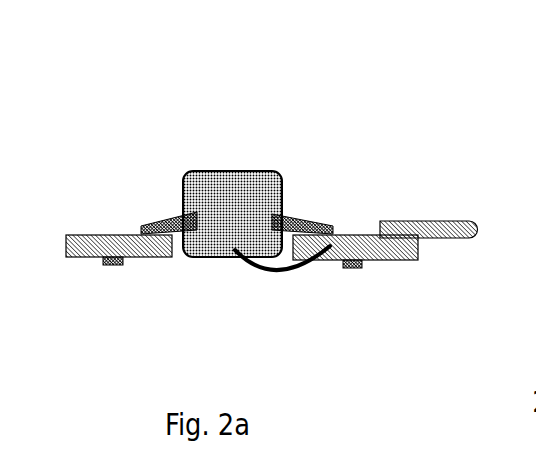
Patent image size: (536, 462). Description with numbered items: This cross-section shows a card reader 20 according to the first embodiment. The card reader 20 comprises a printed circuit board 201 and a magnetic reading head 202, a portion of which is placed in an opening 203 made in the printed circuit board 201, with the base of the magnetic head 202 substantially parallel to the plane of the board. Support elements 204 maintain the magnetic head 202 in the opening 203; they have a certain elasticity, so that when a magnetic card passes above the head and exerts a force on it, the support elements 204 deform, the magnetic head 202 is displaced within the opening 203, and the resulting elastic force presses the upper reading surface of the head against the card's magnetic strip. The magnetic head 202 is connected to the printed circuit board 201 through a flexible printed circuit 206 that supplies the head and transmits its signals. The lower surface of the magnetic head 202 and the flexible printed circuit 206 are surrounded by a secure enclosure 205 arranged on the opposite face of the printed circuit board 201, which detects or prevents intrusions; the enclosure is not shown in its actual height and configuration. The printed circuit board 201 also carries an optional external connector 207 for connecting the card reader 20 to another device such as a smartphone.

The card reader 20 is at (388, 98).
The printed circuit board 201 is at (398, 252).
The magnetic reading head 202 is at (235, 173).
The opening 203 is at (177, 260).
The support elements 204 is at (172, 220).
The secure enclosure 205 is at (105, 265).
The flexible printed circuit 206 is at (269, 268).
The external connector 207 is at (437, 230).